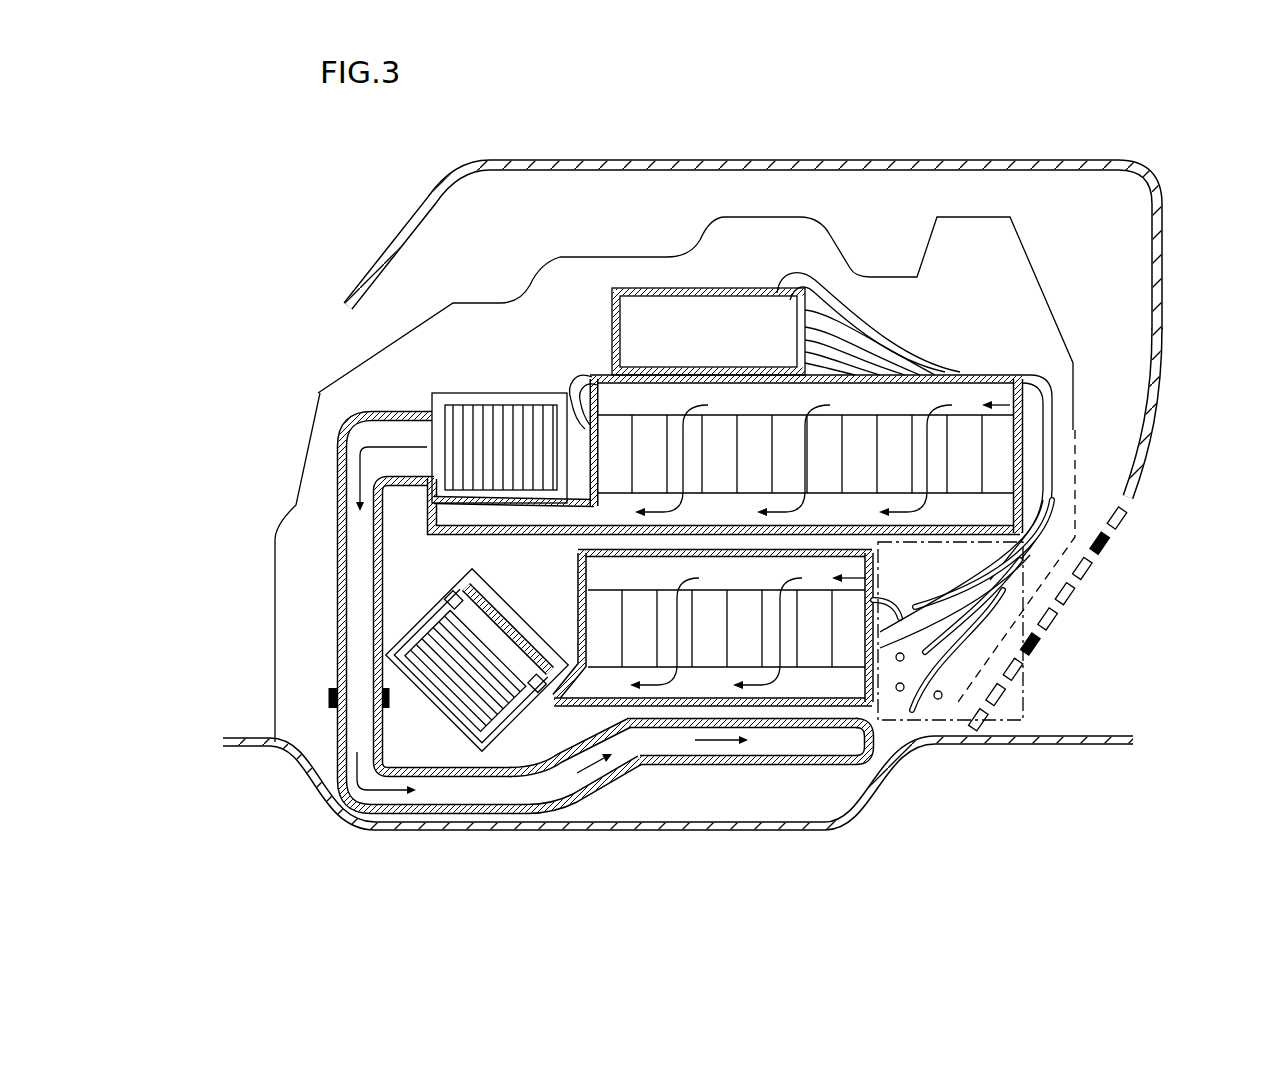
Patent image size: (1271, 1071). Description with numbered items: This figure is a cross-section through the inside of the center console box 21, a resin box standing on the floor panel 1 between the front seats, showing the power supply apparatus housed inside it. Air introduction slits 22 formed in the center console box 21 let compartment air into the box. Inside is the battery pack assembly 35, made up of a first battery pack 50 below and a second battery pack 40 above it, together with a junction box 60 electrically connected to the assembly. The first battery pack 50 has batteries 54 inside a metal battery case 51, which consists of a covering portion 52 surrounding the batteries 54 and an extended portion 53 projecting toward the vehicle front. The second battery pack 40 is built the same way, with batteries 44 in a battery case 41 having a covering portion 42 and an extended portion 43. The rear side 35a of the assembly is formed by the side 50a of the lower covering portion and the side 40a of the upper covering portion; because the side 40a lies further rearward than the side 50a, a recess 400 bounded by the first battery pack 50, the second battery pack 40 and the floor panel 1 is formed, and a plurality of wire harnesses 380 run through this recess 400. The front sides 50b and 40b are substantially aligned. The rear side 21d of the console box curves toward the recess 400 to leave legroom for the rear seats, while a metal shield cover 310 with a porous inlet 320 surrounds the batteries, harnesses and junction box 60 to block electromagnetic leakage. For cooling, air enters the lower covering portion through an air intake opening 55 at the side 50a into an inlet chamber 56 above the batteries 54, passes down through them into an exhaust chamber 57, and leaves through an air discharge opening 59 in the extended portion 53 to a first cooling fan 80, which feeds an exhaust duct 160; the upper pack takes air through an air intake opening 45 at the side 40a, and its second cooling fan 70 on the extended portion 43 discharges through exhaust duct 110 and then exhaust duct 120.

The floor panel 1 is at (737, 828).
The center console box 21 is at (985, 160).
The side 21d is at (1153, 410).
The air introduction slits 22 is at (1023, 662).
The battery pack assembly 35 is at (920, 104).
The side 35a is at (1205, 541).
The second battery pack 40 is at (924, 370).
The side 40a is at (1027, 513).
The side 40b is at (583, 425).
The battery case 41 is at (600, 76).
The covering portion 42 is at (608, 372).
The extended portion 43 is at (572, 367).
The batteries 44 is at (755, 428).
The air intake opening 45 is at (1023, 400).
The first battery pack 50 is at (852, 540).
The side 50a is at (880, 633).
The side 50b is at (610, 572).
The battery case 51 is at (558, 880).
The covering portion 52 is at (650, 707).
The extended portion 53 is at (560, 757).
The batteries 54 is at (710, 650).
The air intake opening 55 is at (872, 580).
The inlet chamber 56 is at (577, 597).
The exhaust chamber 57 is at (833, 687).
The air discharge opening 59 is at (457, 607).
The junction box 60 is at (693, 287).
The second cooling fan 70 is at (491, 393).
The first cooling fan 80 is at (447, 718).
The exhaust duct 110 is at (343, 493).
The exhaust duct 120 is at (785, 763).
The exhaust duct 160 is at (523, 757).
The shield cover 310 is at (1025, 230).
The porous inlet 320 is at (1003, 633).
The wire harnesses 380 is at (942, 706).
The recess 400 is at (1023, 698).